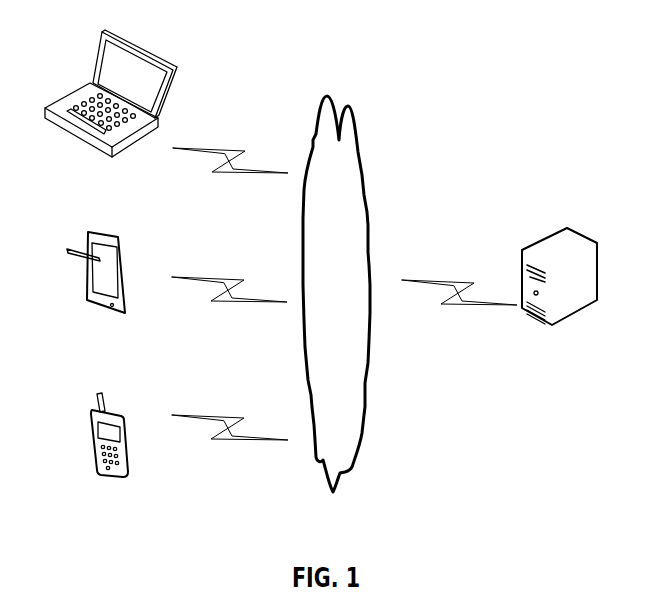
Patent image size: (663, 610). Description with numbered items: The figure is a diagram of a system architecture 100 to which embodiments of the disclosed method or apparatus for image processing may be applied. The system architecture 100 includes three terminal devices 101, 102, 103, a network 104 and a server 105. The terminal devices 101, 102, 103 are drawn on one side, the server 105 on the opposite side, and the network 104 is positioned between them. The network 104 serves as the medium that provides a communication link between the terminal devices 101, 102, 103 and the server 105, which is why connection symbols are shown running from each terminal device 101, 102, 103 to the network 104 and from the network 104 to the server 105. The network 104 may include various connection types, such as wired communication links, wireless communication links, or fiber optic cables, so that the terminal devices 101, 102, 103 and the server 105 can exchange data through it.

The system architecture 100 is at (534, 24).
The terminal device 101 is at (109, 450).
The terminal device 102 is at (96, 288).
The terminal device 103 is at (111, 107).
The network 104 is at (336, 294).
The server 105 is at (559, 293).